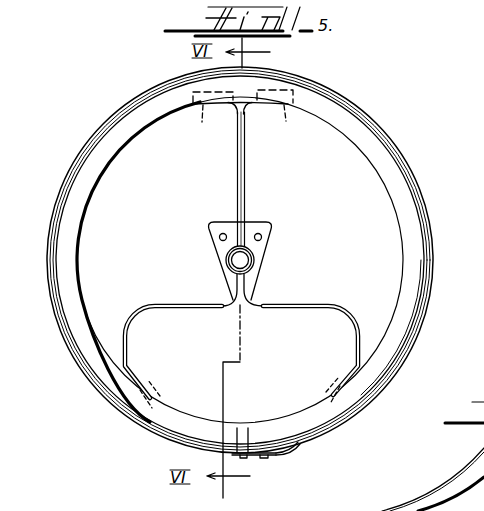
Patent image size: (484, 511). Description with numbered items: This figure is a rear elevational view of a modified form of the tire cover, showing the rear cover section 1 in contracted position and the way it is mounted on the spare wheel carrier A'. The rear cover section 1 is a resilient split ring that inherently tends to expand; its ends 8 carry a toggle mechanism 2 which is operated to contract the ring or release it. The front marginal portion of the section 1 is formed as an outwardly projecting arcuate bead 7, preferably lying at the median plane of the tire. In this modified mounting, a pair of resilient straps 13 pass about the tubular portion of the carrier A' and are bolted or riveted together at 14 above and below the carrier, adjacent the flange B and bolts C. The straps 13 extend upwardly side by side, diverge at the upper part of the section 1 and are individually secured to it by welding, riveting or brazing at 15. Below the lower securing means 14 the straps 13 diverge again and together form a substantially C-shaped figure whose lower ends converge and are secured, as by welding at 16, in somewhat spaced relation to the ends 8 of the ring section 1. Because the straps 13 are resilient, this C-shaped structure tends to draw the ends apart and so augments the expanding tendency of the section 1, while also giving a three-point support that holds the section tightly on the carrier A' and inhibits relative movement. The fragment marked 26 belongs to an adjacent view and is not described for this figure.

The rear cover section 1 is at (95, 221).
The toggle mechanism 2 is at (283, 464).
The arcuate bead 7 is at (50, 239).
The ends of the ring 8 is at (262, 404).
The resilient straps 13 is at (155, 303).
The securing means 14 is at (243, 239).
The securing points 15 is at (202, 122).
The securing points 16 is at (158, 400).
The adjacent figure element 26 is at (483, 453).
The carrier A' is at (218, 269).
The flange B is at (266, 252).
The bolts C is at (219, 234).